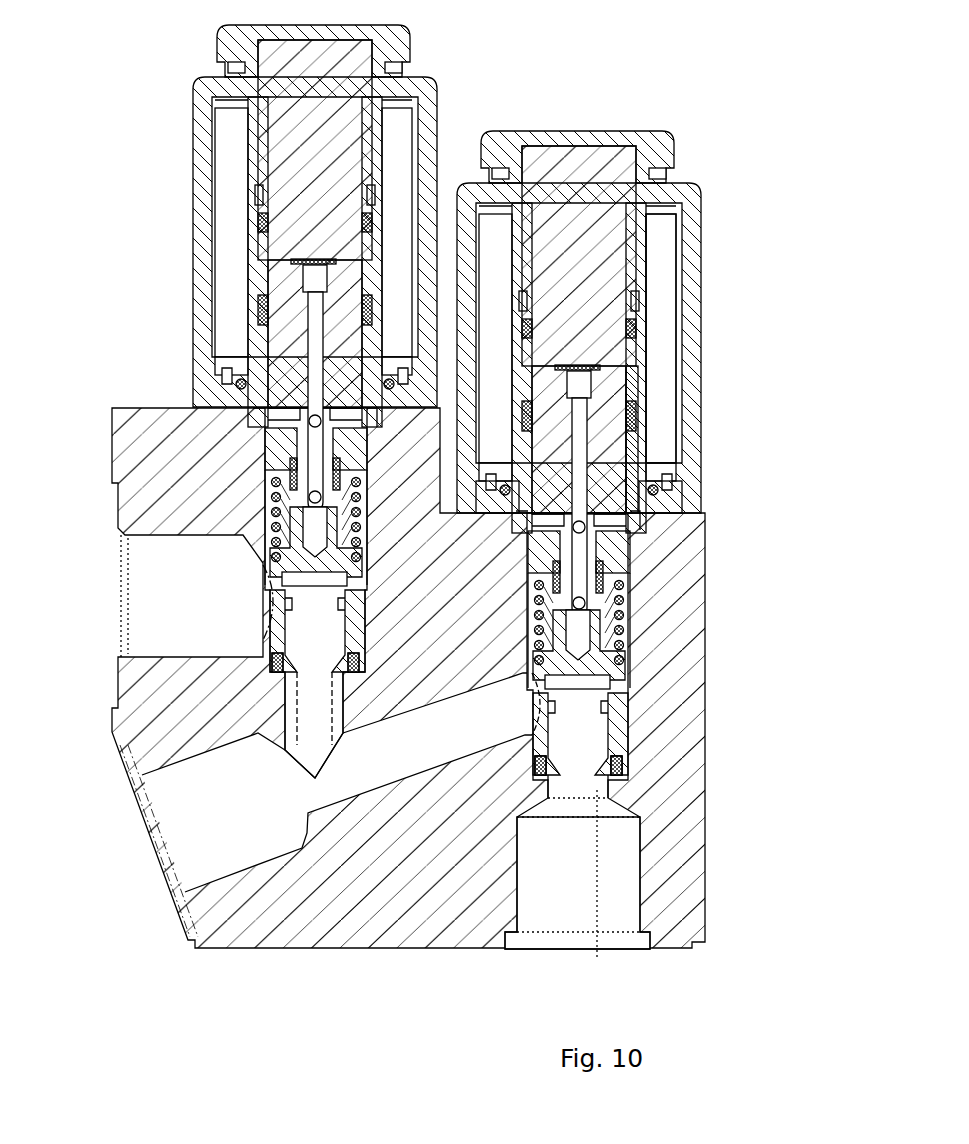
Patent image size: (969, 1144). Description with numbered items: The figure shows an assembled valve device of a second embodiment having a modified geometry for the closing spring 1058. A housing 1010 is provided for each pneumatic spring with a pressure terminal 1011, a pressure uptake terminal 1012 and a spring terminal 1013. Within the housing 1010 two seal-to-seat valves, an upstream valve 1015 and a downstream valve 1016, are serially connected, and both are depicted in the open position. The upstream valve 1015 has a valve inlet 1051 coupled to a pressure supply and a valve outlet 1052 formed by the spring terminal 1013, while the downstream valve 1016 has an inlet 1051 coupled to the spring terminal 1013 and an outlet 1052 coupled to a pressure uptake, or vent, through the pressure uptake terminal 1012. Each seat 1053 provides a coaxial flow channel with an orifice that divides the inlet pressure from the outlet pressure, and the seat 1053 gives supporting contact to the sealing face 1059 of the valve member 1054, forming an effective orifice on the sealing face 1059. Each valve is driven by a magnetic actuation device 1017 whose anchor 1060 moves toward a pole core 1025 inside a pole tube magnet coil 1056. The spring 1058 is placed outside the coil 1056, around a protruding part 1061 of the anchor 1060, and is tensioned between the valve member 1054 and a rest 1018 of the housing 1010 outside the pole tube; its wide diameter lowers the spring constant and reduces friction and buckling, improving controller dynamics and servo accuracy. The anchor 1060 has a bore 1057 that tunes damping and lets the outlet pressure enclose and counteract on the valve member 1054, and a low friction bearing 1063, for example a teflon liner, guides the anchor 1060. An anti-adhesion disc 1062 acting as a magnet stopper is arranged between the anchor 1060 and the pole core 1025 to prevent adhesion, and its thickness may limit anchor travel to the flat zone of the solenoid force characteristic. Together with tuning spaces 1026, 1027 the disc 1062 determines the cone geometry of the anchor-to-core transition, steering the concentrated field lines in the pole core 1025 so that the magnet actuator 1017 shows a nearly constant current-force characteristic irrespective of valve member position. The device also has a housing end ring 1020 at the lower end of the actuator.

The housing 1010 is at (420, 912).
The pressure terminal 1011 is at (540, 908).
The pressure uptake terminal 1012 is at (140, 638).
The spring terminal 1013 is at (175, 798).
The upstream valve 1015 is at (637, 722).
The downstream valve 1016 is at (263, 577).
The magnetic actuation device 1017 is at (180, 112).
The rest 1018 is at (613, 569).
The housing end ring 1020 is at (633, 493).
The pole core 1025 is at (608, 230).
The tuning space 1026 is at (633, 297).
The tuning space 1027 is at (630, 387).
The valve inlet 1051 is at (315, 665).
The valve outlet 1052 is at (252, 592).
The seat 1053 is at (290, 611).
The valve member 1054 is at (602, 672).
The pole tube magnet coil 1056 is at (662, 256).
The bore 1057 is at (578, 433).
The closing spring 1058 is at (270, 497).
The sealing face 1059 is at (578, 683).
The anchor 1060 is at (607, 455).
The protruding part 1061 is at (590, 548).
The anti-adhesion disc 1062 is at (530, 367).
The low friction bearing 1063 is at (263, 447).